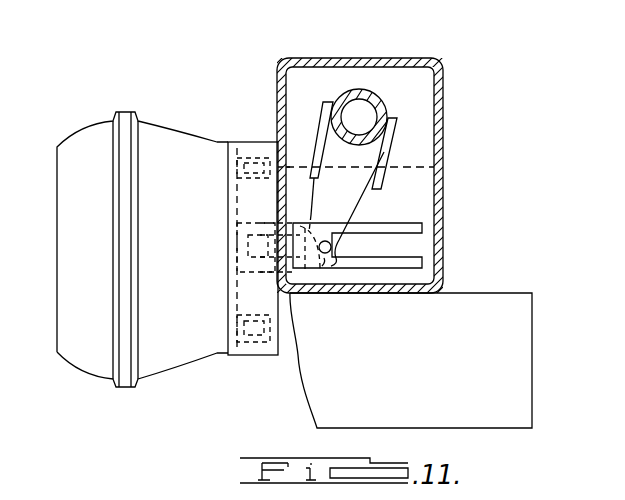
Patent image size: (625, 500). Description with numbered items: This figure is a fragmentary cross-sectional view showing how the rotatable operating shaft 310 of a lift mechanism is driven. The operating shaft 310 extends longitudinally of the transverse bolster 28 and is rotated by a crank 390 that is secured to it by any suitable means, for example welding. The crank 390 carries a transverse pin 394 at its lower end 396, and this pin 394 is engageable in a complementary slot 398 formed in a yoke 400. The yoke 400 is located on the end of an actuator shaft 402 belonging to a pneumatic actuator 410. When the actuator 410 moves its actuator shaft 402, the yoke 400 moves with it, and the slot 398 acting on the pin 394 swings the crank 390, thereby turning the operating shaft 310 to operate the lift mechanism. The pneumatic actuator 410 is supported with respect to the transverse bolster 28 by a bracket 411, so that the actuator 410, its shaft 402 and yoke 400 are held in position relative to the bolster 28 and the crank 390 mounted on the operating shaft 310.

The bolster 28 is at (344, 56).
The operating shaft 310 is at (377, 91).
The crank 390 is at (364, 210).
The transverse pin 394 is at (332, 247).
The lower end 396 is at (322, 267).
The slot 398 is at (405, 251).
The yoke 400 is at (424, 262).
The actuator shaft 402 is at (246, 224).
The pneumatic actuator 410 is at (168, 129).
The bracket 411 is at (245, 141).